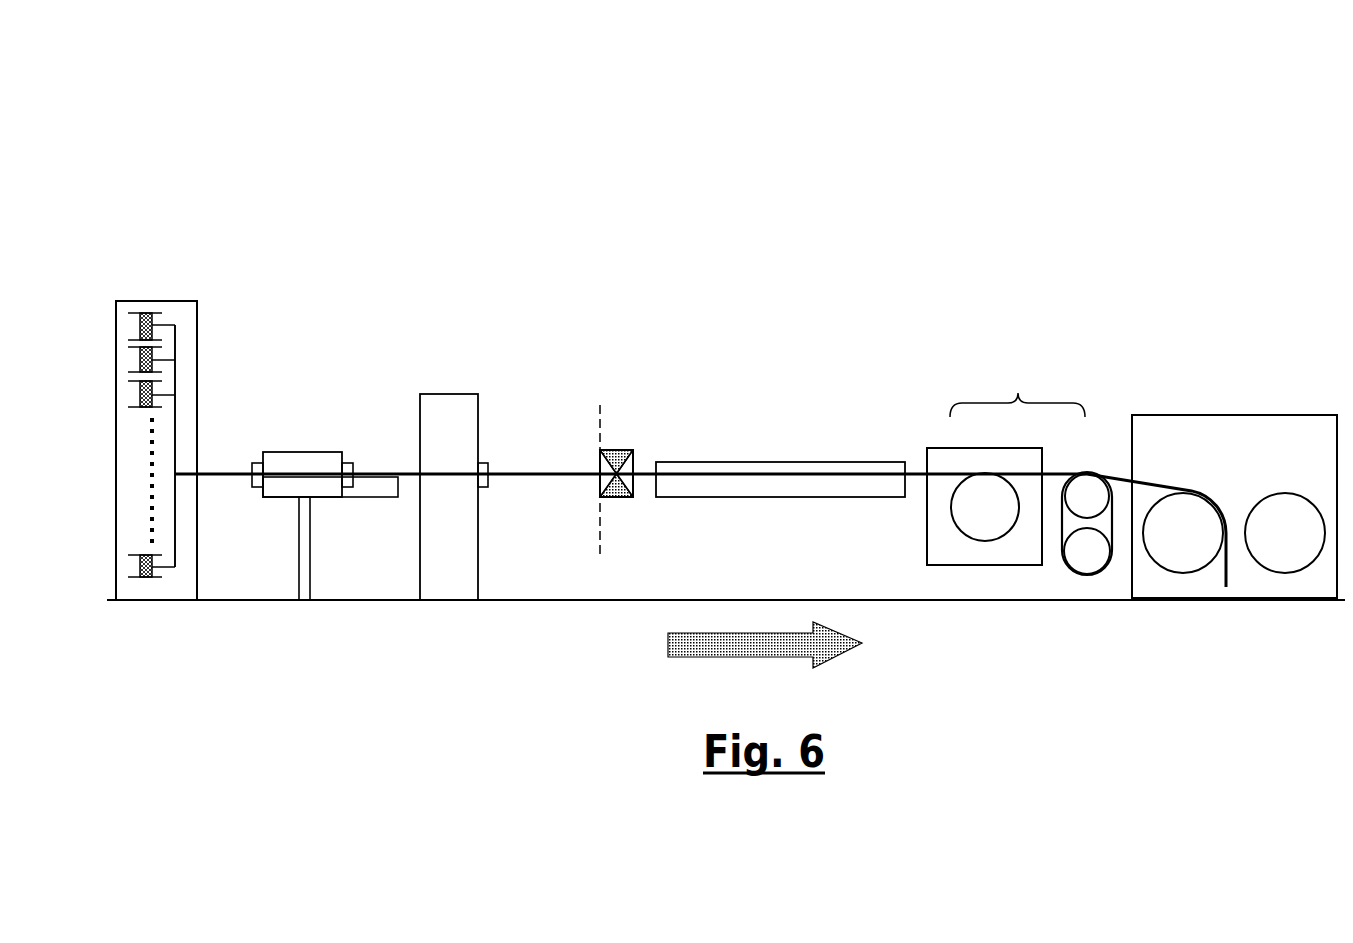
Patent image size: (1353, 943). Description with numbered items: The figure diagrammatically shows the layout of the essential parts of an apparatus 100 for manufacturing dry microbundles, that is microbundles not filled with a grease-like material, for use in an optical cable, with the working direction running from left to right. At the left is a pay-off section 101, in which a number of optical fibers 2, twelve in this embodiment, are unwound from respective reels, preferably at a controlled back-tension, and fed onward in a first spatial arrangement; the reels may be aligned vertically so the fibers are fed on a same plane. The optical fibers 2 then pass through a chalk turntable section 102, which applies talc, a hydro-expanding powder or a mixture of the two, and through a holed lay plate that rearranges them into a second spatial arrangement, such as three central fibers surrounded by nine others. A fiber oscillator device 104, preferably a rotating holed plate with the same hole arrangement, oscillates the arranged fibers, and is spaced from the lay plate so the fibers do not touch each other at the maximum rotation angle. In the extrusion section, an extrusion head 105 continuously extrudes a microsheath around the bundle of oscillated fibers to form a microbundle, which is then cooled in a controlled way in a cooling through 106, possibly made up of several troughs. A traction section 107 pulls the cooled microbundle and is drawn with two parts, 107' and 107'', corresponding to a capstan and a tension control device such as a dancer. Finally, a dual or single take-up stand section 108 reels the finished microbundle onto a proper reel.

The apparatus 100 is at (780, 290).
The pay-off section 101 is at (177, 300).
The optical fibers 2 is at (175, 567).
The chalk turntable section 102 is at (303, 452).
The fiber oscillator device 104 is at (450, 394).
The extrusion head 105 is at (627, 450).
The cooling through 106 is at (876, 462).
The traction section 107 is at (1006, 421).
The pulling wheel 107' is at (982, 568).
The pinch roller pair 107'' is at (1107, 572).
The take-up stand section 108 is at (1212, 415).